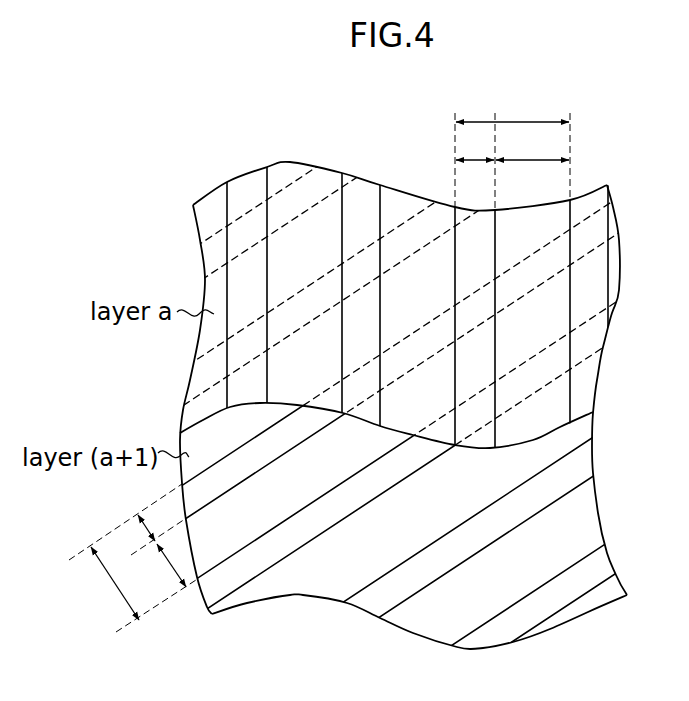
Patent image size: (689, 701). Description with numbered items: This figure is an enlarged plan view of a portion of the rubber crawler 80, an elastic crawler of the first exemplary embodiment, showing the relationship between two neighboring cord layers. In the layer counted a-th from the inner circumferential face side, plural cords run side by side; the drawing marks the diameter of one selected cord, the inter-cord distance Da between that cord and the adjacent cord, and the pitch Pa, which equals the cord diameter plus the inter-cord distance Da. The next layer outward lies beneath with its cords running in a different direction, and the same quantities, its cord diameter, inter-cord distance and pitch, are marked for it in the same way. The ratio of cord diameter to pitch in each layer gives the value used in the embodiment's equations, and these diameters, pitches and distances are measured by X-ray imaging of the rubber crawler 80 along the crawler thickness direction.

The rubber crawler 80 is at (226, 155).
The pitch Pa is at (512, 149).
The inter-cord distance Da is at (532, 145).